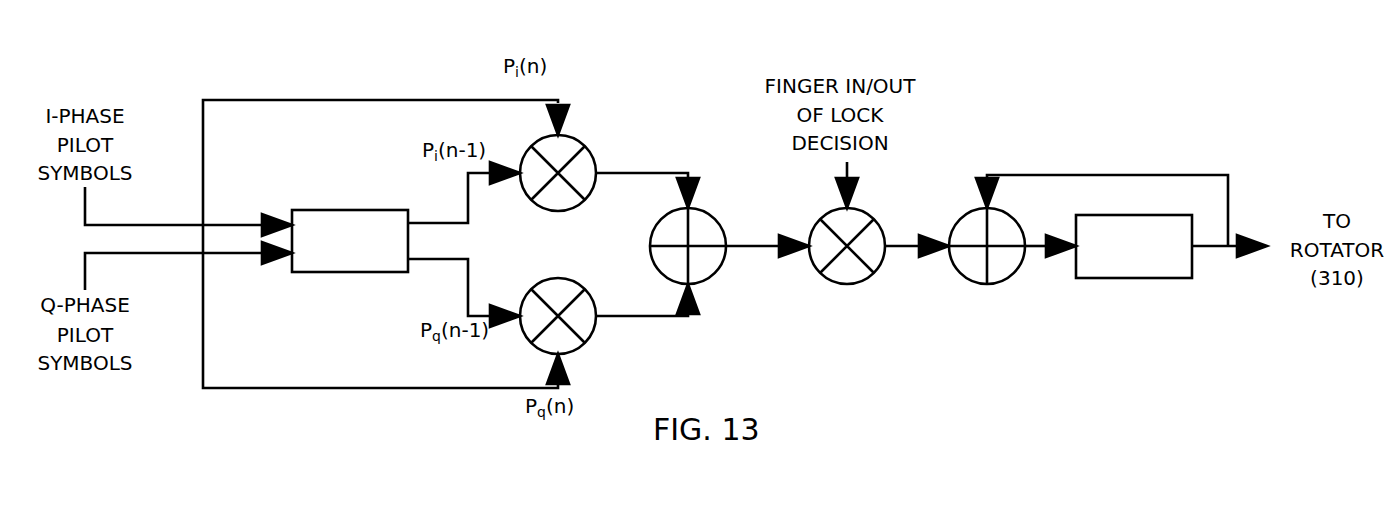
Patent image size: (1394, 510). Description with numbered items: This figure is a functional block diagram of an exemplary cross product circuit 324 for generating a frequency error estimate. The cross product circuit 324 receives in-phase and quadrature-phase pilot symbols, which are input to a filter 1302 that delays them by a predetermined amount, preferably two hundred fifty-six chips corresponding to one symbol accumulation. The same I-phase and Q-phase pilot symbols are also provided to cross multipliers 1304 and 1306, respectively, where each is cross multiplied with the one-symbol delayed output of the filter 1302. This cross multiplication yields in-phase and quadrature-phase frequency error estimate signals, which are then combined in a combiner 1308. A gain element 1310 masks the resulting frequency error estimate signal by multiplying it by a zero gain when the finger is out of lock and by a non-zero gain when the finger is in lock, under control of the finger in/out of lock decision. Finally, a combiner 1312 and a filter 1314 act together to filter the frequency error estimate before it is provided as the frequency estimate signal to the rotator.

The cross product circuit 324 is at (1062, 58).
The filter 1302 is at (367, 209).
The cross multiplier 1304 is at (585, 146).
The cross multiplier 1306 is at (552, 280).
The combiner 1308 is at (722, 222).
The gain element 1310 is at (855, 285).
The combiner 1312 is at (1000, 287).
The filter 1314 is at (1140, 279).